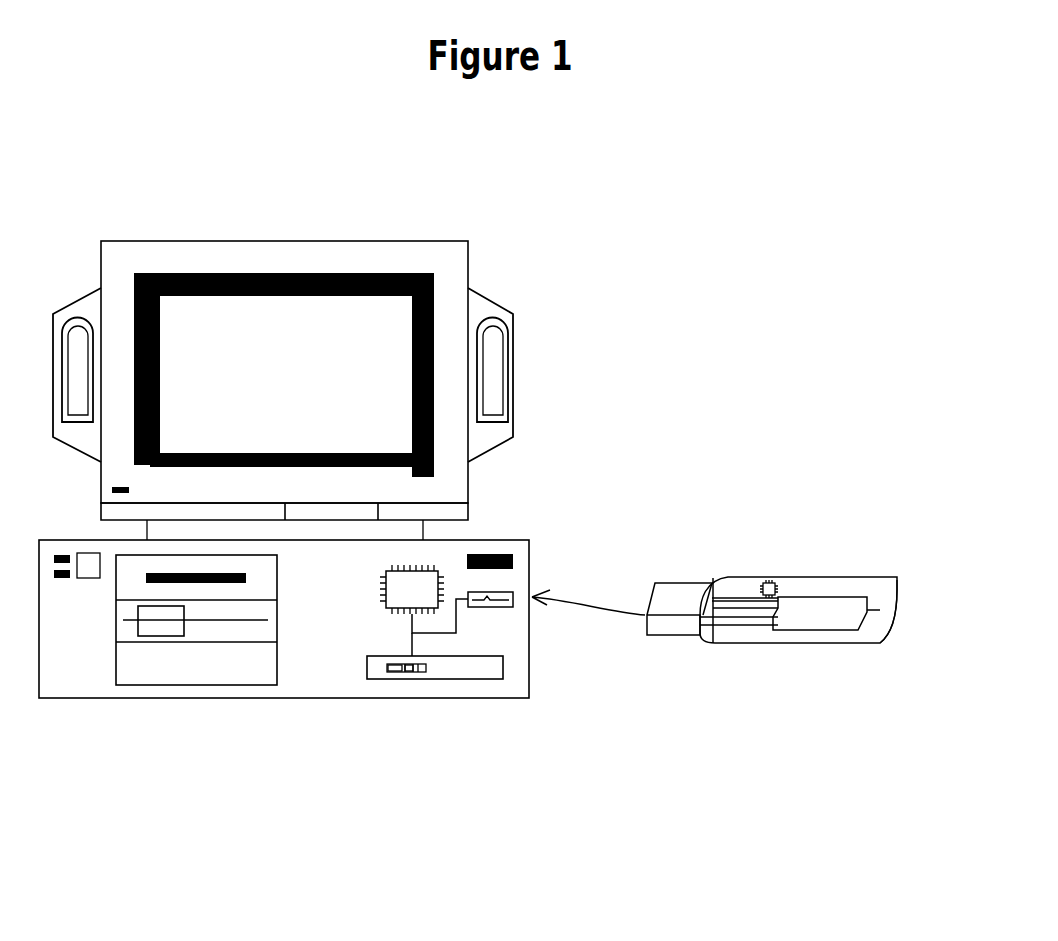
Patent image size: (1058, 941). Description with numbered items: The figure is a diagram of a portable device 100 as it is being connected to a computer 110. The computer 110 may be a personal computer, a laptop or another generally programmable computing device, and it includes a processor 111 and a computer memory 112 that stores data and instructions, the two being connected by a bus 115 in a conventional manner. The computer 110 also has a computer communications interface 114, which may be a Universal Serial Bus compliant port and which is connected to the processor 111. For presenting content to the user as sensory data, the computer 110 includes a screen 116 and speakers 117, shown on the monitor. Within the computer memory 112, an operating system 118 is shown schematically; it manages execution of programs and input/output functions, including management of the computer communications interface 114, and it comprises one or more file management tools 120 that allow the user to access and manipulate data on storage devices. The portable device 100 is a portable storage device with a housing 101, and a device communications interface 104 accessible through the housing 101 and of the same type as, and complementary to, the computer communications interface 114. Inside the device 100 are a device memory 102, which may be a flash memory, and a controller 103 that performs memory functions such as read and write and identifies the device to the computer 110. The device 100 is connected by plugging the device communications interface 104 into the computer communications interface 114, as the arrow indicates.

The portable device 100 is at (757, 645).
The housing 101 is at (892, 608).
The device memory 102 is at (850, 602).
The controller 103 is at (768, 580).
The device communications interface 104 is at (685, 582).
The computer 110 is at (311, 698).
The processor 111 is at (438, 577).
The computer memory 112 is at (420, 672).
The computer communications interface 114 is at (513, 592).
The bus 115 is at (456, 622).
The screen 116 is at (353, 330).
The speakers 117 is at (65, 307).
The operating system 118 is at (402, 672).
The file management tools 120 is at (412, 672).